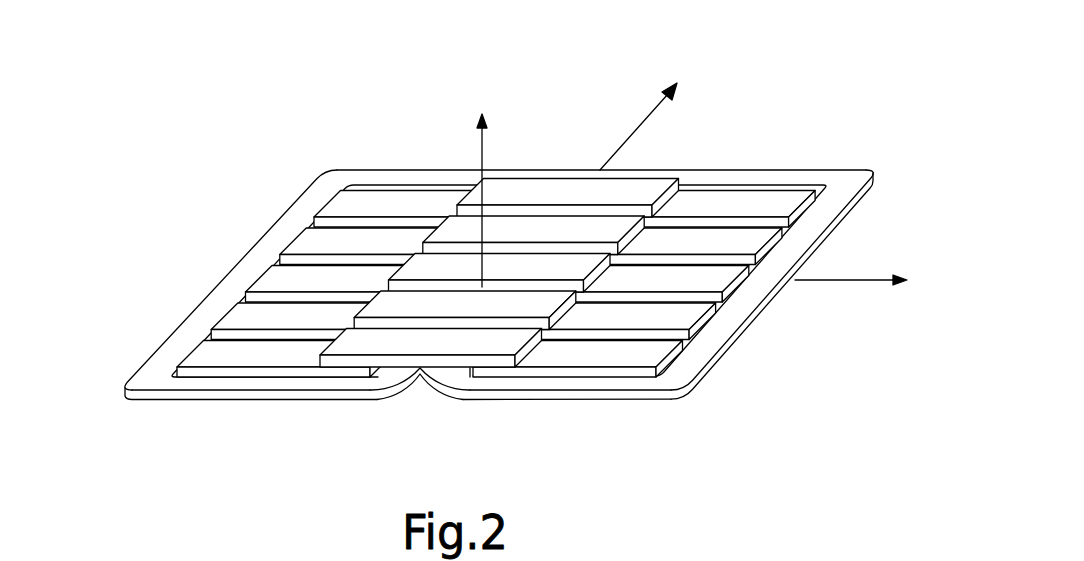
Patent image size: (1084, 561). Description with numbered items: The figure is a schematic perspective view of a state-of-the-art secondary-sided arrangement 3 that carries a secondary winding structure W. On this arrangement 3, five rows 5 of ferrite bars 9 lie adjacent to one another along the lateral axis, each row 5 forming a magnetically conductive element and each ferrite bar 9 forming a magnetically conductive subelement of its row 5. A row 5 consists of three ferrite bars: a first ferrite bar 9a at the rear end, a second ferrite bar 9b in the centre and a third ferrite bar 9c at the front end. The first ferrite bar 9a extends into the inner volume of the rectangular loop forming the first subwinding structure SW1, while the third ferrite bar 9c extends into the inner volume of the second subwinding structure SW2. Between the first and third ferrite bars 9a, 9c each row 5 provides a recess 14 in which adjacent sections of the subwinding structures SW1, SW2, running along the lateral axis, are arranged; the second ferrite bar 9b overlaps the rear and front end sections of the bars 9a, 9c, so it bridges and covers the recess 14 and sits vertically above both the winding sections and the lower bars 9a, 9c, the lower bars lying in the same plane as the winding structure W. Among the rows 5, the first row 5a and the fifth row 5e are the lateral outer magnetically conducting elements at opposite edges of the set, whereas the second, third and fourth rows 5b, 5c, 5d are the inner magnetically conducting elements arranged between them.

The secondary-sided arrangement 3 is at (490, 274).
The row 5 is at (444, 252).
The first row 5a is at (560, 349).
The second row 5b is at (635, 318).
The third row 5c is at (703, 271).
The fourth row 5d is at (592, 232).
The fifth row 5e is at (426, 204).
The ferrite bar 9 is at (444, 252).
The first ferrite bar 9a is at (292, 215).
The second ferrite bar 9b is at (499, 253).
The third ferrite bar 9c is at (655, 252).
The recess 14 is at (455, 373).
The first subwinding structure SW1 is at (278, 215).
The second subwinding structure SW2 is at (820, 167).
The secondary winding structure W is at (313, 181).